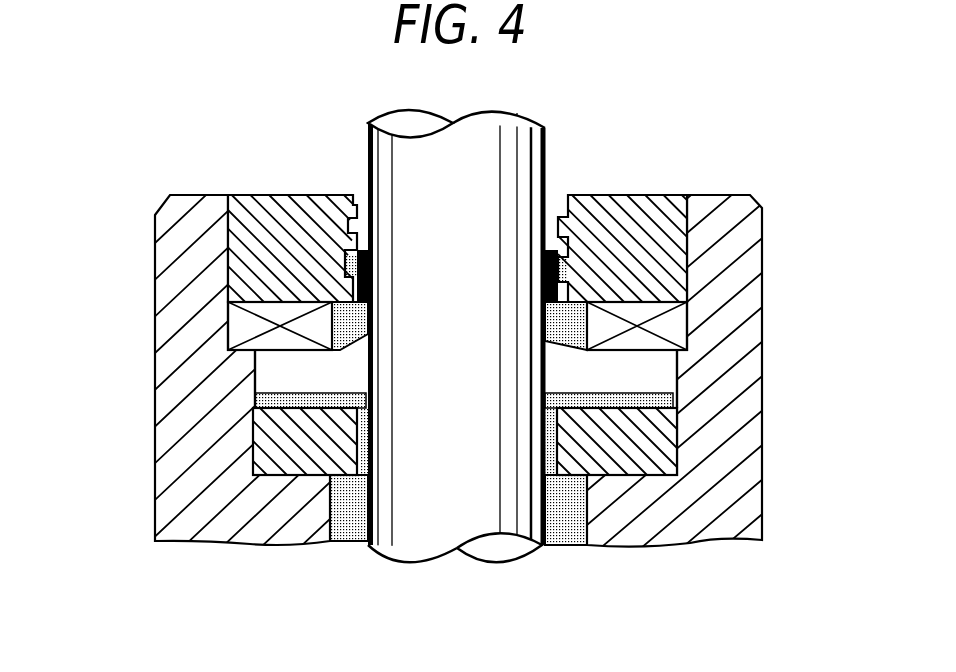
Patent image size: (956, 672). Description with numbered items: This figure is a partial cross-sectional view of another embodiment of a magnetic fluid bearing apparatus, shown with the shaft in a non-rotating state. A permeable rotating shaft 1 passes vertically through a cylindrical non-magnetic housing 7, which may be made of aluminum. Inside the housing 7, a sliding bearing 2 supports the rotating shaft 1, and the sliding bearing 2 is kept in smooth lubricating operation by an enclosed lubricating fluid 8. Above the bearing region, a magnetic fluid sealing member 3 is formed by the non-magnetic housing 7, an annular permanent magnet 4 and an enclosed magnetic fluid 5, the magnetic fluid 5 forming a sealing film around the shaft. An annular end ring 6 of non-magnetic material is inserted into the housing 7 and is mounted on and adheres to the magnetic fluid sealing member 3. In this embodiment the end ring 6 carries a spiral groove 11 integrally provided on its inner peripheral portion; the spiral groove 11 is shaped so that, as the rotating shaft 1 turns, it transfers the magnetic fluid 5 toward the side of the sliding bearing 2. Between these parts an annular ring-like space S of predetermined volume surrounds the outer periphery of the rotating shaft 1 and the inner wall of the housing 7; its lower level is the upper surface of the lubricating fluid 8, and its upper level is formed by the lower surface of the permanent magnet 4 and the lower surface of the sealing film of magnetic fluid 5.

The rotating shaft 1 is at (508, 162).
The sliding bearing 2 is at (253, 448).
The magnetic fluid sealing member 3 is at (282, 360).
The permanent magnet 4 is at (673, 327).
The magnetic fluid 5 is at (333, 322).
The end ring 6 is at (258, 209).
The housing 7 is at (175, 272).
The lubricating fluid 8 is at (570, 548).
The spiral groove 11 is at (340, 215).
The space S is at (658, 380).